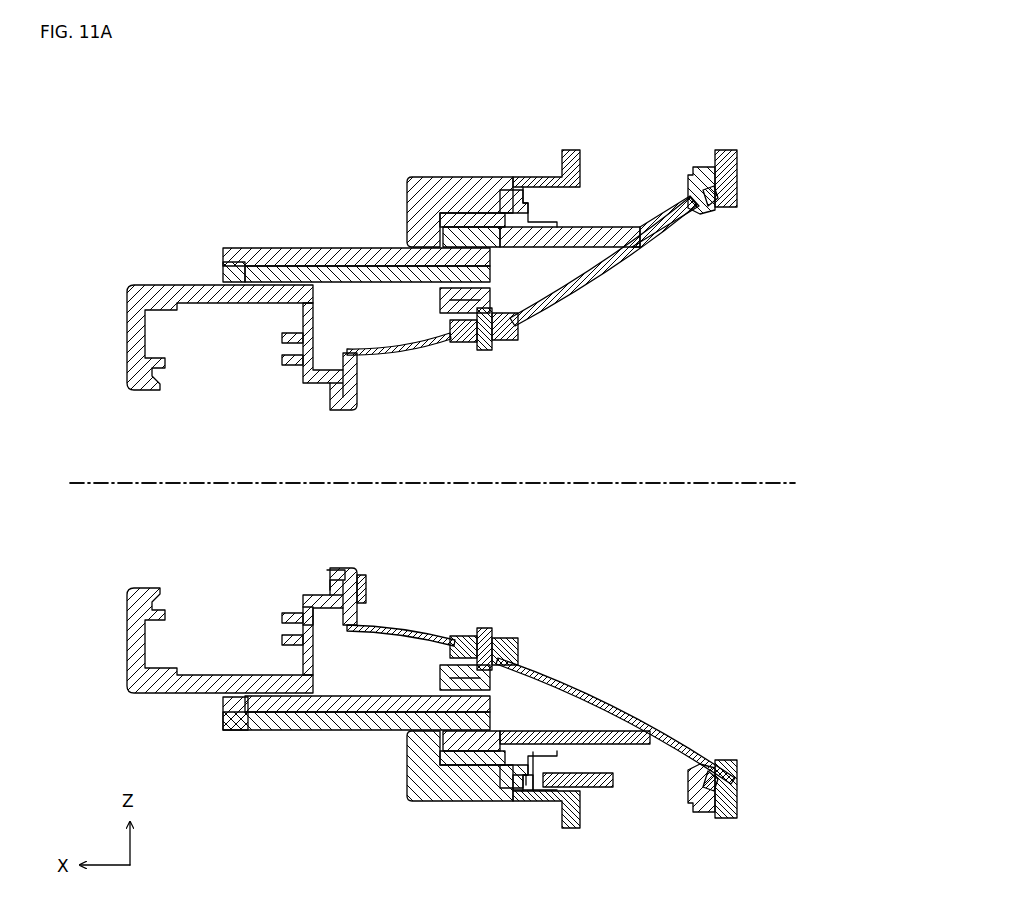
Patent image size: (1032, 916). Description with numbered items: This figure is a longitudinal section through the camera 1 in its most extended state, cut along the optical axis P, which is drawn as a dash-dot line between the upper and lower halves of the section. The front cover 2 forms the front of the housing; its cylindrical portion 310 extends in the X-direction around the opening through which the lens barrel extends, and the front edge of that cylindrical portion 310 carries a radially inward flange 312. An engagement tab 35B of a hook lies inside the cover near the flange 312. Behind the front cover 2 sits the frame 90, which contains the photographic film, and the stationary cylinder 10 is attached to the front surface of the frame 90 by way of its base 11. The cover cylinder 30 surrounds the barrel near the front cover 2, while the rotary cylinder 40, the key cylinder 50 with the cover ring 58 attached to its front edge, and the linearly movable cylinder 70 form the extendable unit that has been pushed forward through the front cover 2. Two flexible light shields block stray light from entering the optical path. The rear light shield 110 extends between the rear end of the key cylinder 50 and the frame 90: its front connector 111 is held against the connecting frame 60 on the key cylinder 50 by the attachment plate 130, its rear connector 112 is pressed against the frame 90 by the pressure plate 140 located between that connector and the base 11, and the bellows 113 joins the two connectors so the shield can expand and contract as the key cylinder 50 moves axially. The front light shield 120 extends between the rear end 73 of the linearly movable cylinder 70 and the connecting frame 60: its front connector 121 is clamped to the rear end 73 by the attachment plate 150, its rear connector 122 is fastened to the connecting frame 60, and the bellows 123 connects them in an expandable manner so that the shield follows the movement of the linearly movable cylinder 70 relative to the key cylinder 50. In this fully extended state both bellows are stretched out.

The camera 1 is at (349, 103).
The front cover 2 is at (557, 179).
The stationary cylinder 10 is at (604, 214).
The base 11 is at (661, 224).
The cover cylinder 30 is at (447, 181).
The rotary cylinder 40 is at (362, 247).
The key cylinder 50 is at (480, 221).
The cover ring 58 is at (222, 718).
The connecting frame 60 is at (490, 364).
The linearly movable cylinder 70 is at (190, 290).
The rear end 73 is at (332, 606).
The frame 90 is at (736, 172).
The rear light shield 110 is at (622, 700).
The front connector 111 is at (500, 354).
The rear connector 112 is at (711, 209).
The bellows 113 is at (609, 283).
The front light shield 120 is at (414, 371).
The front connector 121 is at (350, 568).
The rear connector 122 is at (478, 640).
The bellows 123 is at (398, 628).
The attachment plate 130 is at (520, 333).
The pressure plate 140 is at (701, 167).
The attachment plate 150 is at (368, 594).
The cylindrical portion 310 is at (522, 192).
The flange 312 is at (495, 790).
The engagement tab 35B is at (527, 793).
The optical axis P is at (103, 480).